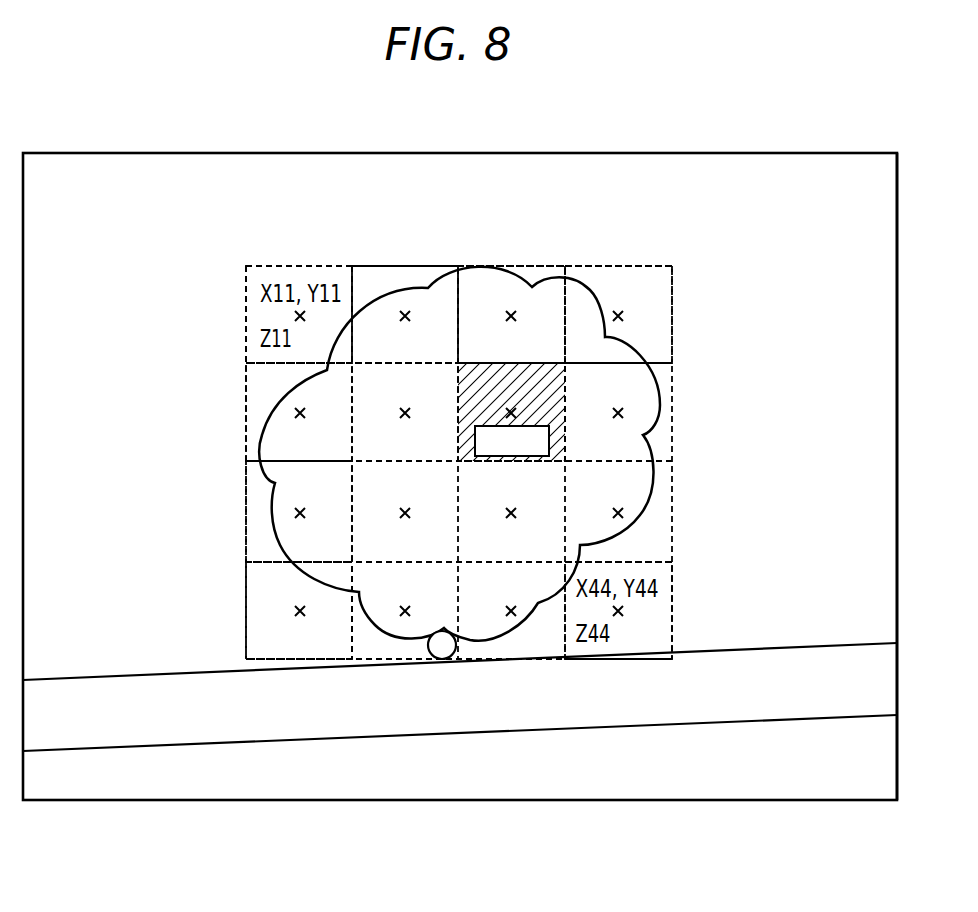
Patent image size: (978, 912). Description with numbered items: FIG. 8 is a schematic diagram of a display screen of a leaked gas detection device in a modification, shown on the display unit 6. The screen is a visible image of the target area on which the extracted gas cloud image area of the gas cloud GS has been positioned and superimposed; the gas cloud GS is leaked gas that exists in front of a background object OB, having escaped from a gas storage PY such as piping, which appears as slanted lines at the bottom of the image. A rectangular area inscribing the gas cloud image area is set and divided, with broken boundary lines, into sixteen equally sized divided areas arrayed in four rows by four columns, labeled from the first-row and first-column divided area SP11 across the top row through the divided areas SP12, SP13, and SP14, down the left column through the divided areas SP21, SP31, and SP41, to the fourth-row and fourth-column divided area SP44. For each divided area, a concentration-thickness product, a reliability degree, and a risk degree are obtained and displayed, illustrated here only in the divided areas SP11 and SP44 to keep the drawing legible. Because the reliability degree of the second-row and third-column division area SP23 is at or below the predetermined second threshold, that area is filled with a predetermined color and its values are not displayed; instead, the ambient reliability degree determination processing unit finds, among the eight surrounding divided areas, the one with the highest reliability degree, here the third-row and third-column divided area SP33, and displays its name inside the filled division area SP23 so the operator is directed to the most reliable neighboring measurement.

The display unit 6 is at (468, 153).
The background object OB is at (867, 232).
The gas storage PY is at (867, 643).
The gas cloud GS is at (532, 282).
The first-row and first-column divided area SP11 is at (306, 277).
The first-row and second-column divided area SP12 is at (400, 277).
The first-row and third-column divided area SP13 is at (487, 277).
The first-row and fourth-column divided area SP14 is at (648, 277).
The second-row and first-column divided area SP21 is at (258, 396).
The second-row and third-column division area SP23 is at (553, 410).
The third-row and first-column divided area SP31 is at (258, 510).
The third-row and third-column divided area SP33 is at (512, 441).
The fourth-row and first-column divided area SP41 is at (258, 623).
The fourth-row and fourth-column divided area SP44 is at (628, 568).